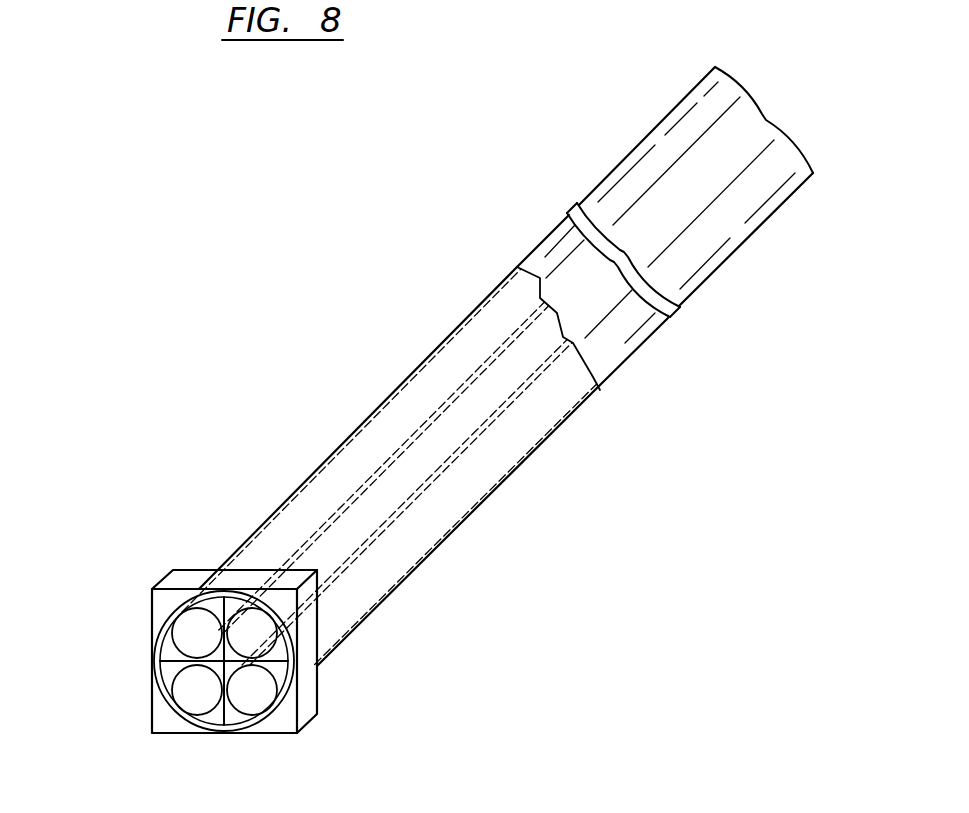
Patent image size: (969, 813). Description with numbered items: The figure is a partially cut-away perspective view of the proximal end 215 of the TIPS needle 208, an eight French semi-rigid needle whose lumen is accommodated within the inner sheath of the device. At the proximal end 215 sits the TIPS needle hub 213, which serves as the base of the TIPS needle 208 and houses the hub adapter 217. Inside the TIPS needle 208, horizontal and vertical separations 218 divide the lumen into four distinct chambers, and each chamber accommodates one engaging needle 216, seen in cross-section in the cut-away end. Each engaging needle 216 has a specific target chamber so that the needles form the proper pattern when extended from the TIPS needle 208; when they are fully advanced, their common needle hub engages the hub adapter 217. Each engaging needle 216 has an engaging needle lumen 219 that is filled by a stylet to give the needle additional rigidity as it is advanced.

The TIPS needle 208 is at (600, 377).
The TIPS needle hub 213 is at (312, 720).
The proximal end 215 is at (124, 768).
The engaging needle 216 is at (243, 655).
The hub adapter 217 is at (232, 596).
The horizontal and vertical separations 218 is at (165, 656).
The engaging needle lumen 219 is at (193, 691).